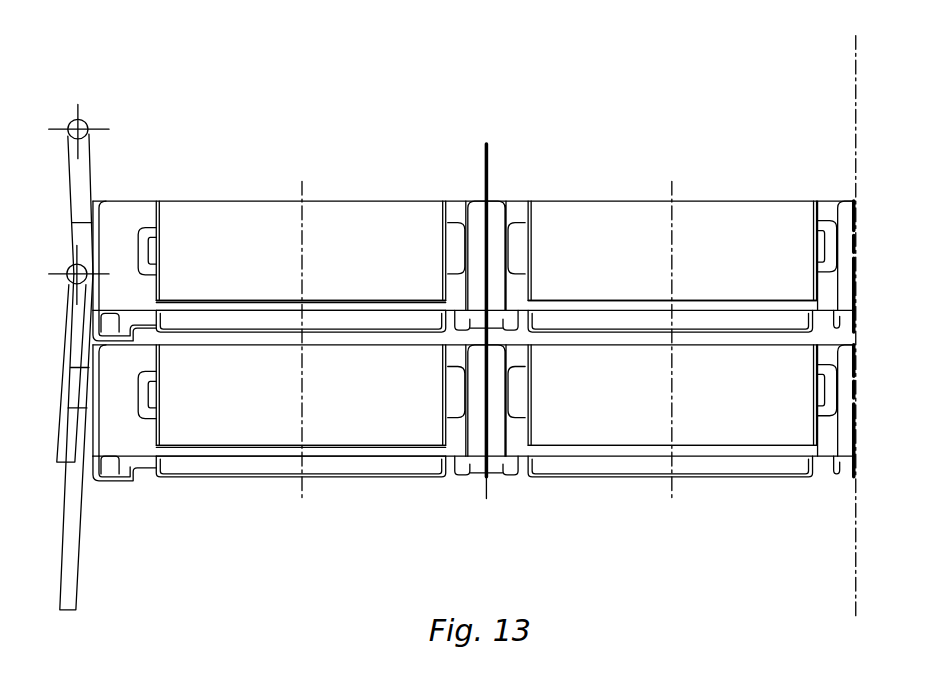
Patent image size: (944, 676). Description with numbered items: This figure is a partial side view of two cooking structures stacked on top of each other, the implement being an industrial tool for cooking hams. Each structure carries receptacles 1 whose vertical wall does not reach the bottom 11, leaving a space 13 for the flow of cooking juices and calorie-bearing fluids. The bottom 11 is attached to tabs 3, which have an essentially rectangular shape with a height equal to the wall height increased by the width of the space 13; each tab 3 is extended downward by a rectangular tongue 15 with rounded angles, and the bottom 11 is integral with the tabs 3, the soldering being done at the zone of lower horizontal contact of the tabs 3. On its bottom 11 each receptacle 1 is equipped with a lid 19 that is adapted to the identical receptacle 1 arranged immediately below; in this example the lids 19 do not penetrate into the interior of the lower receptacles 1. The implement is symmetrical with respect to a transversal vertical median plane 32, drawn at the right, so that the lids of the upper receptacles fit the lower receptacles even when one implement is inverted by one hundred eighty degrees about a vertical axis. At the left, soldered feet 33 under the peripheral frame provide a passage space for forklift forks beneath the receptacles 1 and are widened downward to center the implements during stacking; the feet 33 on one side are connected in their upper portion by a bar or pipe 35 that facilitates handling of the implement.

The receptacle 1 is at (232, 261).
The tab 3 is at (127, 207).
The bottom 11 is at (342, 300).
The space 13 is at (207, 457).
The tongue 15 is at (472, 477).
The lid 19 is at (331, 480).
The transversal vertical median plane 32 is at (850, 62).
The feet 33 is at (72, 578).
The bar or pipe 35 is at (85, 118).